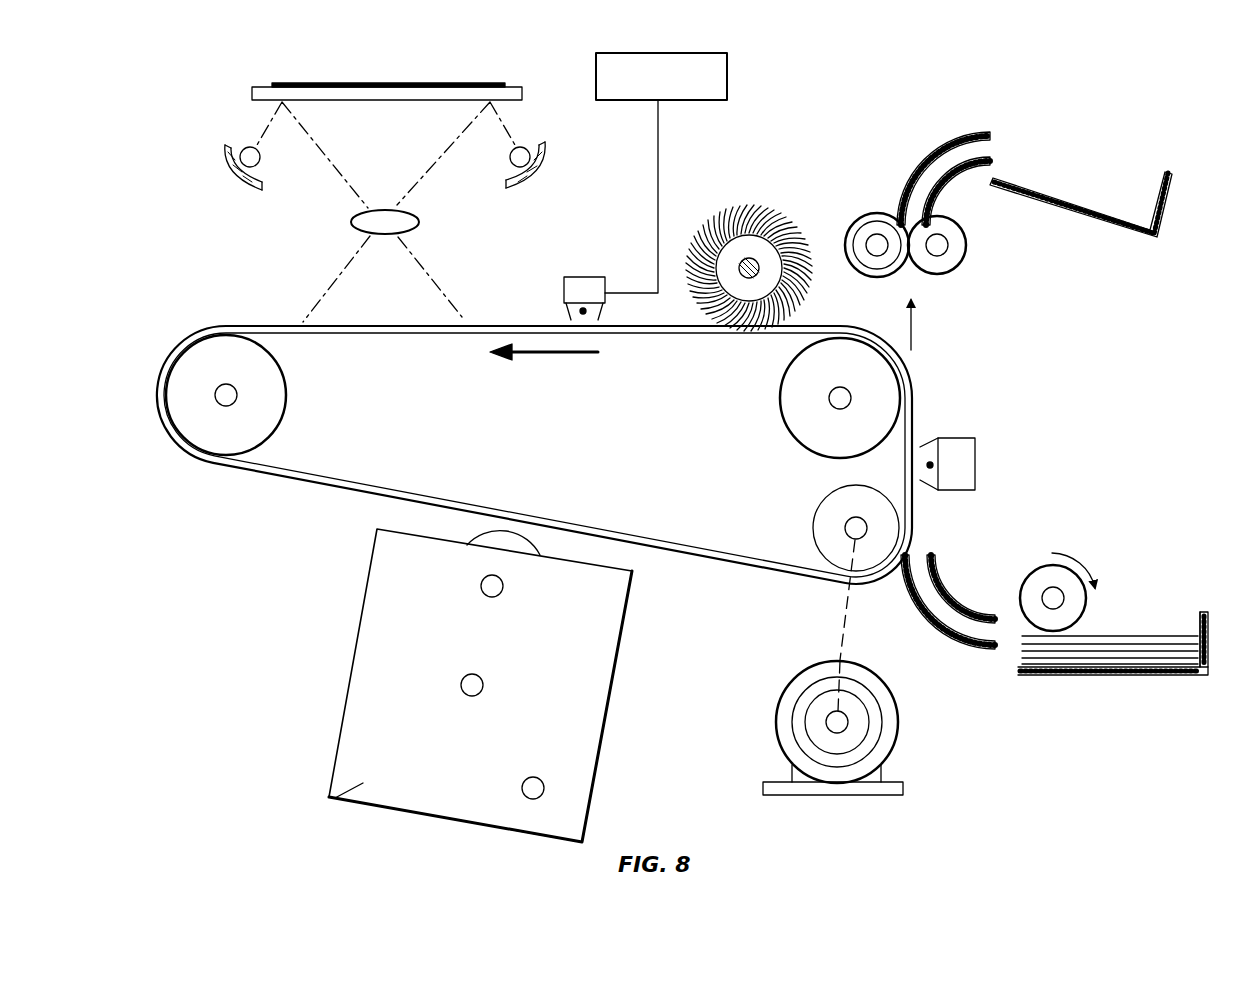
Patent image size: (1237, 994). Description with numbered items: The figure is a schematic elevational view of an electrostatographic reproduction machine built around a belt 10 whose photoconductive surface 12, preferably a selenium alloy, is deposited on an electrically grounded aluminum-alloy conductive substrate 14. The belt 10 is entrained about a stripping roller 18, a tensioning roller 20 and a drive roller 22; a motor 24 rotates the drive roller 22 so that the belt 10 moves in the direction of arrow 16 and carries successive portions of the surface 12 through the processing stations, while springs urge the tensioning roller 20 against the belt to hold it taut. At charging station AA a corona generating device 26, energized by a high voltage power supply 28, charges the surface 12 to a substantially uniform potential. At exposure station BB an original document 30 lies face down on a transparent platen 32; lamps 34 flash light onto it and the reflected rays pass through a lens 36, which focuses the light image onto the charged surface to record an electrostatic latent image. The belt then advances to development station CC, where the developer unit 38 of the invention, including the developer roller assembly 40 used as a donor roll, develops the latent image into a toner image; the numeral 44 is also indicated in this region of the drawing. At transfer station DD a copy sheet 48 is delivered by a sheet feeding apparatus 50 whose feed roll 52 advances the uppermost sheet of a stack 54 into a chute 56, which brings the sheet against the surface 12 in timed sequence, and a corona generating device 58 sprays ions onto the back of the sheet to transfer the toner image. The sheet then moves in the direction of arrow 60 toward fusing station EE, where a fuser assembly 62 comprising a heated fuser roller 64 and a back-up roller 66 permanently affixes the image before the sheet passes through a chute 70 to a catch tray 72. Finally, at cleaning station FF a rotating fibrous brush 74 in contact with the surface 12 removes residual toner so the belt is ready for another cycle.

The belt 10 is at (692, 366).
The photoconductive surface 12 is at (772, 565).
The conductive substrate 14 is at (443, 492).
The arrow 16 is at (578, 358).
The stripping roller 18 is at (805, 412).
The tensioning roller 20 is at (275, 397).
The drive roller 22 is at (832, 528).
The motor 24 is at (920, 722).
The corona generating device 26 is at (591, 266).
The high voltage power supply 28 is at (698, 54).
The original document 30 is at (472, 84).
The transparent platen 32 is at (520, 88).
The lamps 34 is at (243, 150).
The lens 36 is at (398, 218).
The developer unit 38 is at (307, 690).
The developer roller assembly 40 is at (528, 540).
The housing 44 is at (330, 798).
The copy sheet 48 is at (913, 423).
The sheet feeding apparatus 50 is at (1125, 607).
The feed roll 52 is at (1063, 578).
The stack 54 is at (1118, 676).
The chute 56 is at (955, 597).
The corona generating device 58 is at (975, 463).
The arrow 60 is at (913, 365).
The fuser assembly 62 is at (970, 288).
The heated fuser roller 64 is at (862, 258).
The back-up roller 66 is at (957, 245).
The chute 70 is at (930, 155).
The catch tray 72 is at (1077, 197).
The fibrous brush 74 is at (727, 215).
The charging station AA is at (760, 65).
The exposure station BB is at (469, 288).
The development station CC is at (325, 643).
The transfer station DD is at (985, 410).
The fusing station EE is at (880, 205).
The cleaning station FF is at (808, 185).